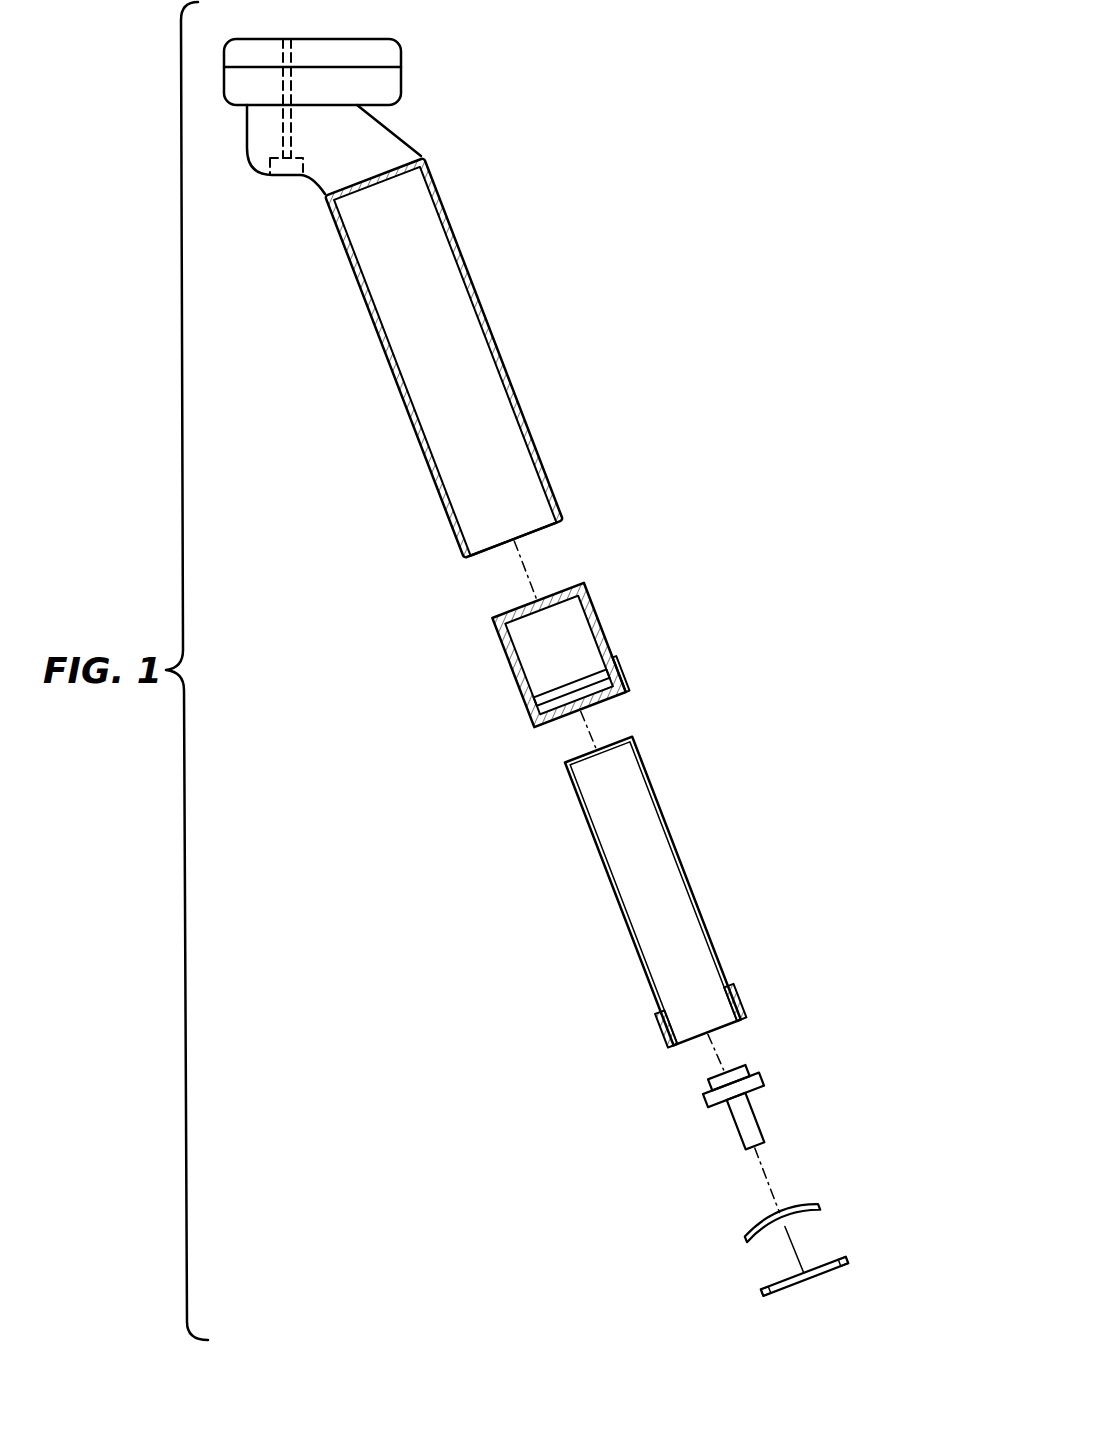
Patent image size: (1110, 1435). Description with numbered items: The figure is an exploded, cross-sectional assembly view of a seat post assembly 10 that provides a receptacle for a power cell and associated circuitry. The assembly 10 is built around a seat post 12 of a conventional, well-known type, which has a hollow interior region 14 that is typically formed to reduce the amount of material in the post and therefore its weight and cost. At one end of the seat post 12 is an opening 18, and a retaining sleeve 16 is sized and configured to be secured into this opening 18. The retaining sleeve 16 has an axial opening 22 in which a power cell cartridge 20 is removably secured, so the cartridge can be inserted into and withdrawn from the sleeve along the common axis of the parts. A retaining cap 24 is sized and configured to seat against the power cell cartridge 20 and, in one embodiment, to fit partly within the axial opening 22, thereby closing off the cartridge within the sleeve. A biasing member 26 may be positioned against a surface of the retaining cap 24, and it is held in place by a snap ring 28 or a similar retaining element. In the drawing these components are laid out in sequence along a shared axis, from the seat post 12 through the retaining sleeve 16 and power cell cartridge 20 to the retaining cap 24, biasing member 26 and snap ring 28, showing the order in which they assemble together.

The seat post assembly 10 is at (663, 193).
The seat post 12 is at (478, 283).
The hollow interior region 14 is at (460, 368).
The retaining sleeve 16 is at (512, 667).
The opening 18 is at (552, 522).
The power cell cartridge 20 is at (665, 822).
The axial opening 22 is at (542, 678).
The retaining cap 24 is at (762, 1083).
The biasing member 26 is at (805, 1205).
The snap ring 28 is at (847, 1257).